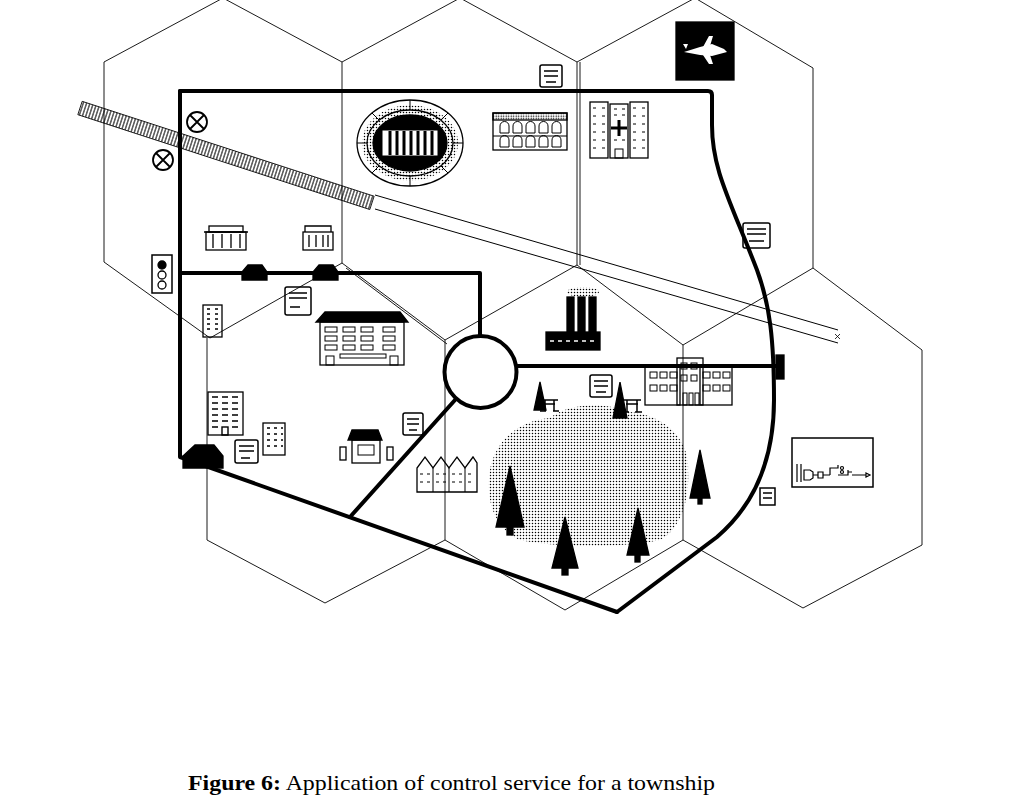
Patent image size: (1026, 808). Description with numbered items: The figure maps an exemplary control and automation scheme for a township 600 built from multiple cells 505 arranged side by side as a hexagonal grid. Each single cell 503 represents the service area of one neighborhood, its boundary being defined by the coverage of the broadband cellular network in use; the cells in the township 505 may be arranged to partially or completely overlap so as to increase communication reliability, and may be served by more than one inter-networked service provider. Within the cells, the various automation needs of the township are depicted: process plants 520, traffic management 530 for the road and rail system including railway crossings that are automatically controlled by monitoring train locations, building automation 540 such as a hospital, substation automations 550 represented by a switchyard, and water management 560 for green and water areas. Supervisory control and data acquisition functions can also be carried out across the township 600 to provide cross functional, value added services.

The cell 503 is at (130, 28).
The township of multiple cells 505 is at (184, 554).
The process plants 520 is at (603, 303).
The traffic management 530 is at (78, 142).
The building automation 540 is at (595, 166).
The substation automations 550 is at (828, 433).
The water management 560 is at (599, 478).
The township 600 is at (490, 595).